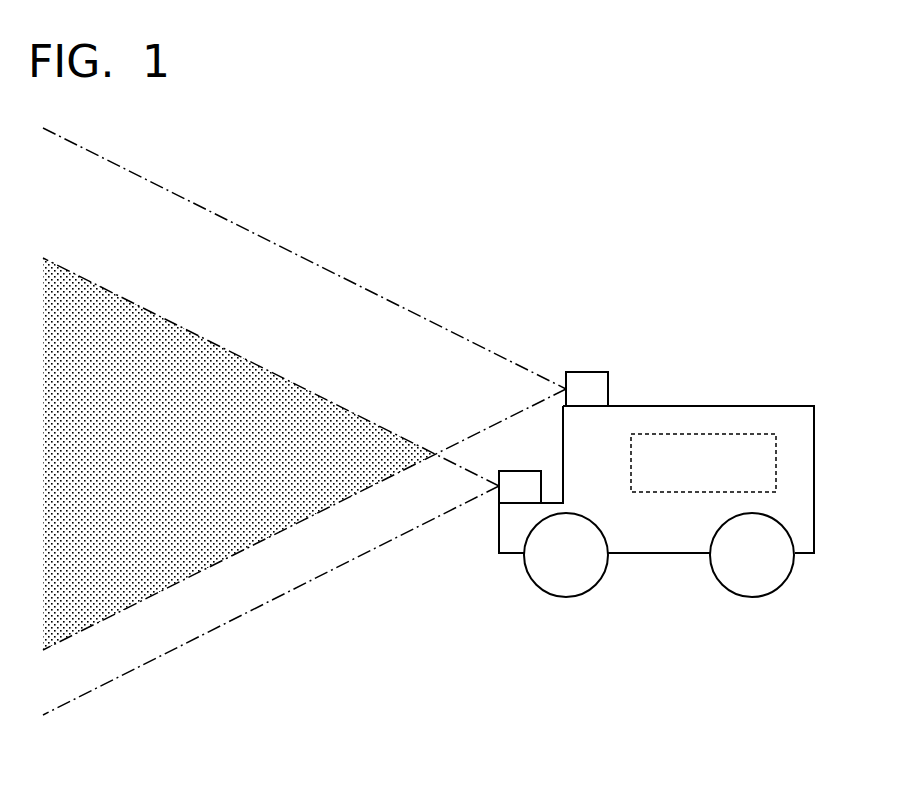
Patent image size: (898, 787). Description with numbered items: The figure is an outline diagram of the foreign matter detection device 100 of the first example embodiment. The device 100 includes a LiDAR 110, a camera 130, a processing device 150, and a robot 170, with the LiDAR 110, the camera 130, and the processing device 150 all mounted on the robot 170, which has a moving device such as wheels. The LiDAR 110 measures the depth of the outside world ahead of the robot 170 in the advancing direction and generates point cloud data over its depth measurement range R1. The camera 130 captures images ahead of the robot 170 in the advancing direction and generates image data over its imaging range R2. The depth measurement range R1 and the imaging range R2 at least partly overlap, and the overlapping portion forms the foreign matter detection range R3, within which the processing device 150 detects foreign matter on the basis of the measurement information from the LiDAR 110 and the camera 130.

The foreign matter detection device 100 is at (755, 309).
The LiDAR 110 is at (585, 372).
The camera 130 is at (522, 470).
The processing device 150 is at (708, 432).
The robot 170 is at (780, 405).
The depth measurement range R1 is at (208, 210).
The imaging range R2 is at (250, 613).
The foreign matter detection range R3 is at (295, 383).